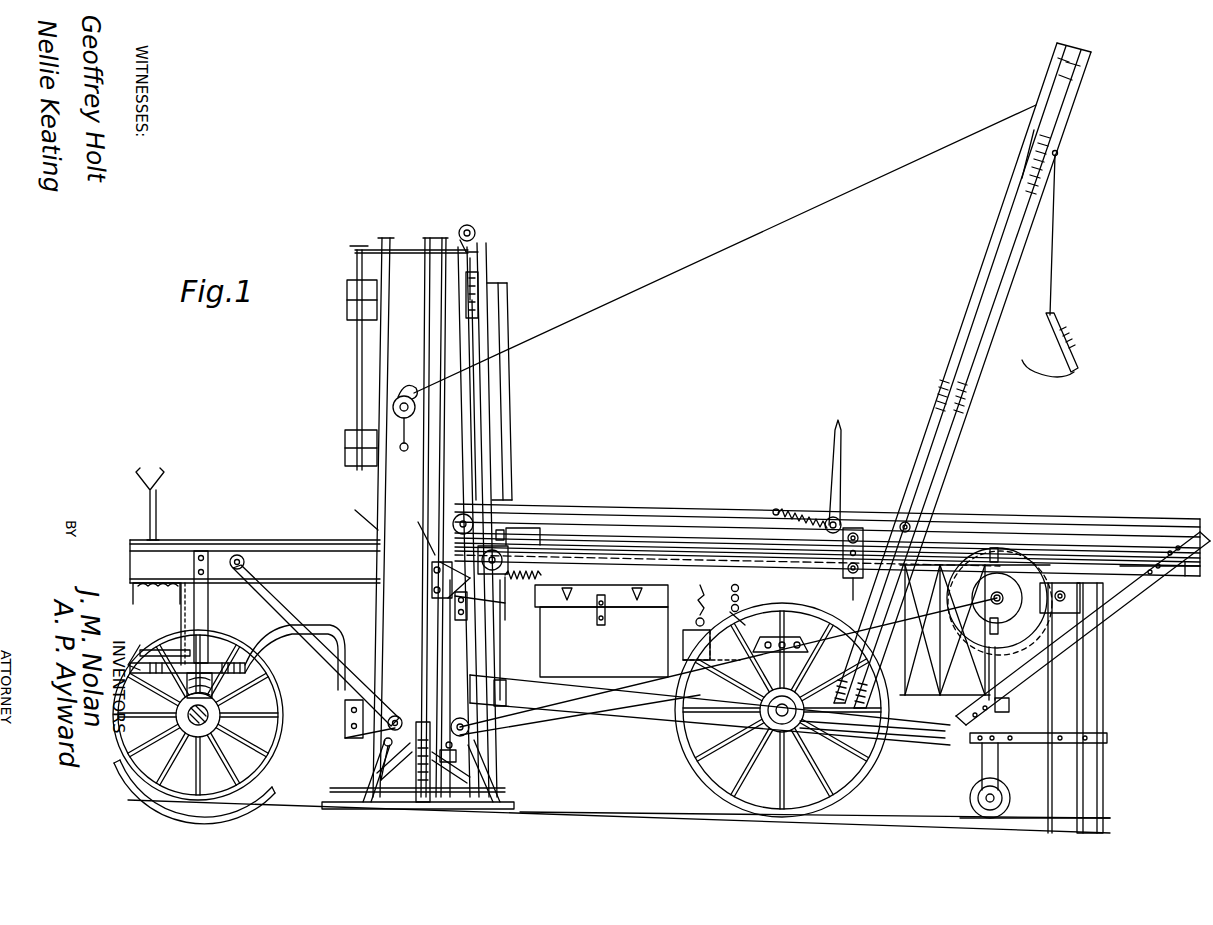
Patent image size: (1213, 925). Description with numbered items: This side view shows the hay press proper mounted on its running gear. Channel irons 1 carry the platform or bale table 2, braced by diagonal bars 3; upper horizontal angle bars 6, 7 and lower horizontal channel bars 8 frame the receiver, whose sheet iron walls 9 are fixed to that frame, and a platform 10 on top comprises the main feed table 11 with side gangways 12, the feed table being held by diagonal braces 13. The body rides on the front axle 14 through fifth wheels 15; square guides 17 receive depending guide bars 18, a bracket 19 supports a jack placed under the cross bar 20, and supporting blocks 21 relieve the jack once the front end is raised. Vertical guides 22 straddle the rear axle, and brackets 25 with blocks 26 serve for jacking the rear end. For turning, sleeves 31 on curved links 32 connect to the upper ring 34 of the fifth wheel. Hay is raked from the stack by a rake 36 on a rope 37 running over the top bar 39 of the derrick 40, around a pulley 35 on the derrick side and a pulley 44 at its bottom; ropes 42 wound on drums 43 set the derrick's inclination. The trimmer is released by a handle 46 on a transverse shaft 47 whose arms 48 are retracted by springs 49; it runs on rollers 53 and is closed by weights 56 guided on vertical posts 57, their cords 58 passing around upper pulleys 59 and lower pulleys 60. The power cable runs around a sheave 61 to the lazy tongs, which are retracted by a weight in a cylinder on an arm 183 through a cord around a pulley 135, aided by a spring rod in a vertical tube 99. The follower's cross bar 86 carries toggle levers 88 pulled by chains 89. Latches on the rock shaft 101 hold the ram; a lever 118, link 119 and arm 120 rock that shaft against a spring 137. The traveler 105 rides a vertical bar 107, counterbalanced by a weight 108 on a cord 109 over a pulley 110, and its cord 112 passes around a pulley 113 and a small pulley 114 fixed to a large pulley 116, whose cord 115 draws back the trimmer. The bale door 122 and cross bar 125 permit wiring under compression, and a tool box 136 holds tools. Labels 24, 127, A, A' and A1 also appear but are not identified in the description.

The channel irons 1 is at (262, 562).
The platform or bale table 2 is at (312, 547).
The diagonal bars 3 is at (316, 668).
The upper horizontal angle bar 6 is at (684, 528).
The upper horizontal angle bar 7 is at (708, 575).
The lower horizontal channel bars 8 is at (710, 710).
The sheet iron walls 9 is at (743, 597).
The platform 10 is at (745, 508).
The main feed table 11 is at (1046, 520).
The side gangways 12 is at (606, 518).
The diagonal braces 13 is at (1090, 624).
The front axle 14 is at (222, 722).
The fifth wheels 15 is at (187, 666).
The square guides 17 is at (212, 622).
The depending guide bars 18 is at (204, 560).
The bracket 19 is at (148, 648).
The cross bar 20 is at (133, 595).
The supporting blocks 21 is at (180, 635).
The vertical guides 22 is at (762, 782).
The rear wheel 24 is at (857, 778).
The brackets 25 is at (713, 649).
The blocks 26 is at (690, 640).
The sleeve 31 is at (345, 712).
The curved link 32 is at (262, 640).
The upper ring of the fifth wheel 34 is at (142, 660).
The pulley 35 is at (945, 398).
The rake 36 is at (1072, 368).
The rope 37 is at (1058, 228).
The top bar of derrick 39 is at (1072, 72).
The derrick 40 is at (987, 240).
The ropes 42 is at (725, 249).
The drums 43 is at (393, 407).
The pulley 44 is at (872, 732).
The handle 46 is at (842, 440).
The transverse shaft 47 is at (836, 538).
The arms 48 is at (843, 555).
The springs 49 is at (790, 515).
The rollers 53 is at (853, 580).
The weights 56 is at (480, 304).
The vertical posts 57 is at (472, 345).
The cords 58 is at (470, 272).
The upper pulleys 59 is at (476, 232).
The lower pulleys 60 is at (467, 517).
The sheave 61 is at (1002, 812).
The cross bar of the follower 86 is at (362, 728).
The toggle levers 88 is at (383, 744).
The chains 89 is at (414, 808).
The vertical tube 99 is at (995, 670).
The transverse rock shaft 101 is at (503, 530).
The vertical traveler 105 is at (437, 580).
The vertical bar 107 is at (442, 626).
The weight 108 is at (500, 683).
The cord 109 is at (522, 575).
The pulley 110 is at (505, 559).
The cord 112 is at (520, 742).
The pulley 113 is at (470, 730).
The small pulley 114 is at (1001, 595).
The cord 115 is at (948, 553).
The large pulley 116 is at (999, 601).
The lever 118 is at (425, 530).
The link 119 is at (447, 592).
The arm 120 is at (535, 530).
The door 122 is at (357, 318).
The cross bar 125 is at (346, 452).
The fork 127 is at (162, 482).
The pulley 135 is at (1140, 582).
The tool box 136 is at (601, 631).
The spring 137 is at (527, 598).
The arm 183 is at (1032, 740).
The mast A is at (423, 517).
The mast column A' is at (516, 391).
The boom pivot A1 is at (912, 526).